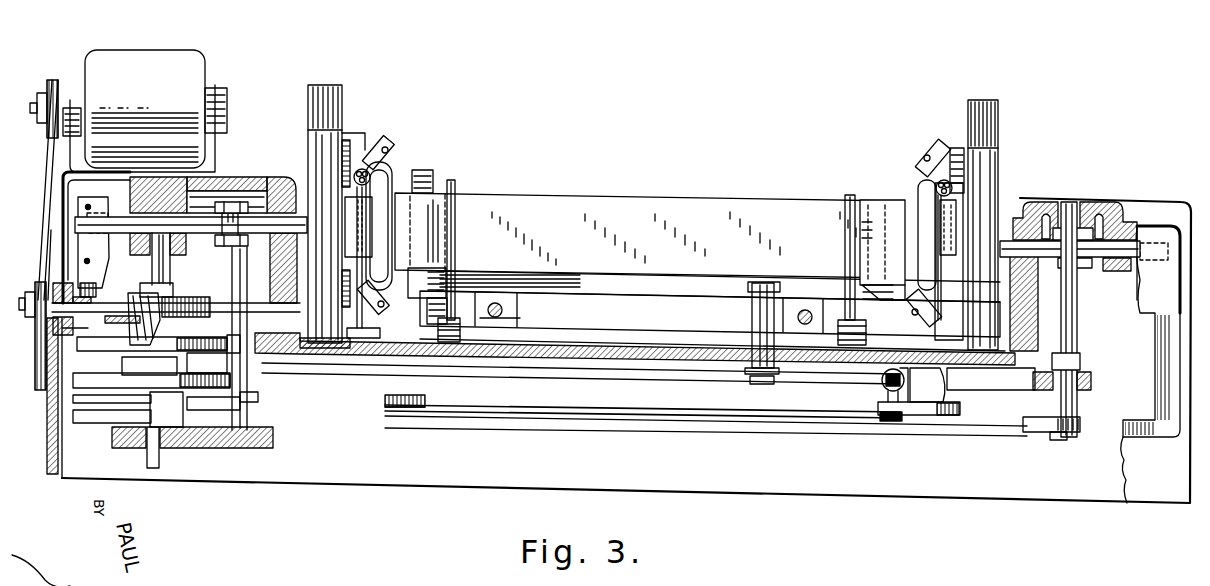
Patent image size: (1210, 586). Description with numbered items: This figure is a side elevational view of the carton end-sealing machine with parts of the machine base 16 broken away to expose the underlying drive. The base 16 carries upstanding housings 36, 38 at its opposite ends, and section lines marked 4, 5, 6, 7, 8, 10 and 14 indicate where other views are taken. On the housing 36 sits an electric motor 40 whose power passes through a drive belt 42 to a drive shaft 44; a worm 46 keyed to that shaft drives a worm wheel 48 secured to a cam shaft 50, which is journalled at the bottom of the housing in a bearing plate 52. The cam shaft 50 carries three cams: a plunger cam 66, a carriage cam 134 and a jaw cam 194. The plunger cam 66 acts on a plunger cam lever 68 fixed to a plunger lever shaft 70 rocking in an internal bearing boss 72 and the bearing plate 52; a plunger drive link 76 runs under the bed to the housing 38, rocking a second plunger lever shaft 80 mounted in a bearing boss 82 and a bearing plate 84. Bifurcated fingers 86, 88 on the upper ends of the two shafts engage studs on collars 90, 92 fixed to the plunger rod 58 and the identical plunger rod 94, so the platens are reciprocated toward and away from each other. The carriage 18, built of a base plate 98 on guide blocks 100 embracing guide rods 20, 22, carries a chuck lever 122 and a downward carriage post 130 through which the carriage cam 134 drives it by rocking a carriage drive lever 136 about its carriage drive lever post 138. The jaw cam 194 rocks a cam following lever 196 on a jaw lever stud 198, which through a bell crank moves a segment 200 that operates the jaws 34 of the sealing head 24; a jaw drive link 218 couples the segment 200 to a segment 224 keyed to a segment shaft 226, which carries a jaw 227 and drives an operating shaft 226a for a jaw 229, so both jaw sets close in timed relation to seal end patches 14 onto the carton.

The section line 4 is at (78, 363).
The section line 5 is at (78, 395).
The section line 6 is at (78, 427).
The section line 7 is at (66, 167).
The section line 8 / clamp 8 is at (917, 165).
The platen roller / section line 10 is at (642, 232).
The end patches 14 is at (307, 398).
The machine base 16 is at (1159, 491).
The carriage 18 is at (570, 295).
The guide rod 20 is at (503, 310).
The guide rod 22 is at (806, 309).
The sealing head 24 is at (358, 117).
The jaws 34 is at (378, 148).
The housing 36 is at (255, 177).
The housing 38 is at (1034, 180).
The electric motor 40 is at (155, 65).
The drive belt 42 is at (46, 198).
The drive shaft 44 is at (102, 300).
The worm 46 is at (132, 303).
The worm wheel 48 is at (188, 300).
The cam shaft 50 is at (170, 275).
The bearing plate 52 is at (166, 448).
The plunger rod 58 is at (283, 216).
The plunger cam 66 is at (102, 377).
The plunger cam lever 68 is at (144, 330).
The plunger lever shaft 70 is at (256, 258).
The internal bearing boss 72 is at (236, 192).
The plunger drive link 76 is at (530, 427).
The second plunger lever shaft 80 is at (1076, 328).
The bearing boss 82 is at (1097, 180).
The bearing plate 84 is at (996, 382).
The bifurcated finger 86 is at (218, 206).
The bifurcated finger 88 is at (1085, 270).
The collar 90 is at (210, 234).
The collar 92 is at (1055, 270).
The plunger rod 94 is at (1138, 262).
The base plate 98 is at (602, 290).
The guide blocks 100 is at (512, 320).
The lever 122 is at (455, 180).
The carriage post 130 is at (752, 315).
The carriage cam 134 is at (226, 326).
The carriage drive lever 136 is at (470, 376).
The carriage drive lever post 138 is at (258, 418).
The jaw cam 194 is at (108, 423).
The cam following lever 196 is at (62, 402).
The jaw lever stud 198 is at (172, 413).
The segment 200 is at (395, 392).
The jaw drive link 218 is at (550, 404).
The segment 224 is at (958, 407).
The segment shaft 226 is at (918, 330).
The operating shaft 226a is at (950, 192).
The jaw 227 is at (915, 200).
The jaw 229 is at (926, 152).